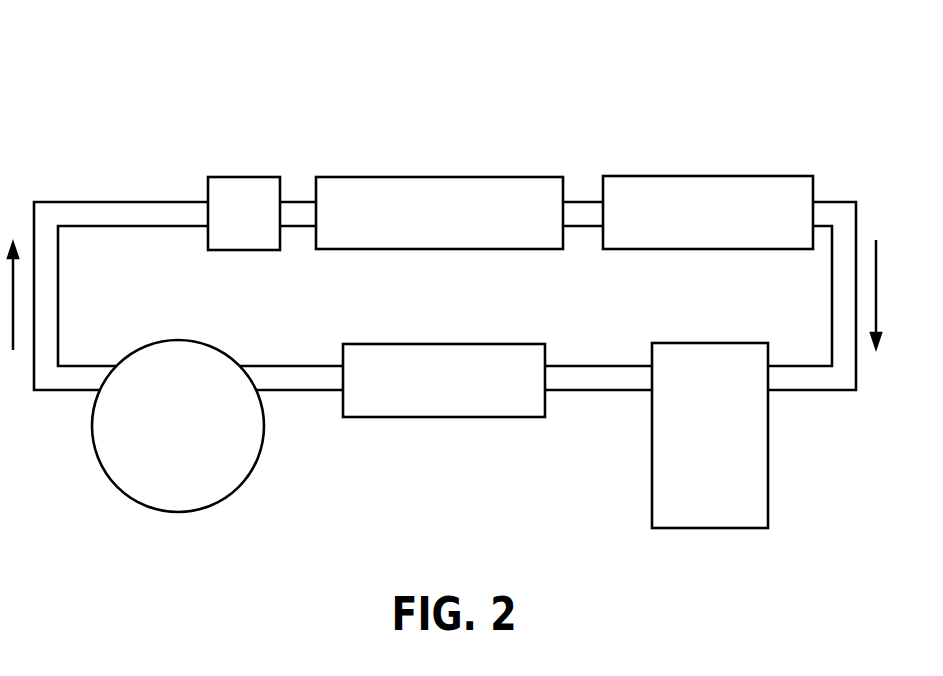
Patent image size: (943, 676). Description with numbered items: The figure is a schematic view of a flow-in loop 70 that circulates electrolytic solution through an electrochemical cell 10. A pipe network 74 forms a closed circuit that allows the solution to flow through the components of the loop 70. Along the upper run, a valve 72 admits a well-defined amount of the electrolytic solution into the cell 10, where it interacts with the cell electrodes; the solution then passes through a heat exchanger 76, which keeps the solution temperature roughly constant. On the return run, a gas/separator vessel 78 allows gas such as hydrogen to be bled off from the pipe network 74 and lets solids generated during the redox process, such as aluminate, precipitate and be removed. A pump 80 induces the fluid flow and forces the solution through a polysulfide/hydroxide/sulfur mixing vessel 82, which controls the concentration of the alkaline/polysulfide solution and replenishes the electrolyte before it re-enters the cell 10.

The flow-in loop 70 is at (131, 84).
The valve 72 is at (242, 188).
The cell 10 is at (435, 187).
The pipe network 74 is at (98, 202).
The heat exchanger 76 is at (702, 187).
The gas/separator vessel 78 is at (703, 517).
The pump 80 is at (435, 402).
The polysulfide/hydroxide/sulfur mixing vessel 82 is at (187, 495).